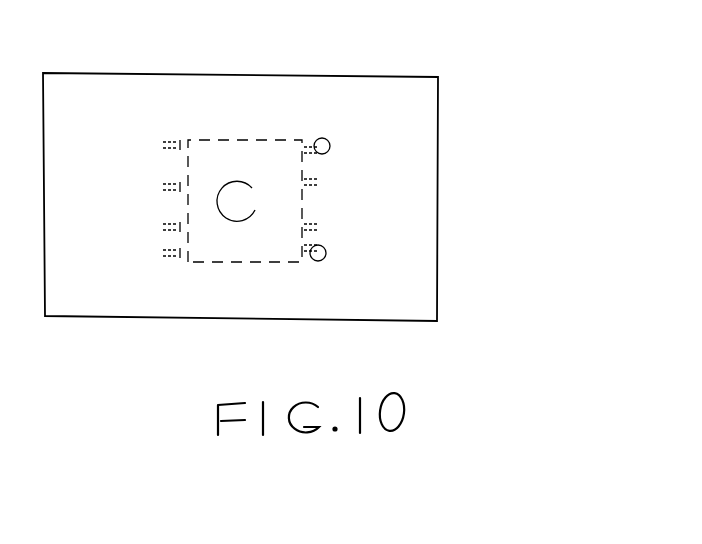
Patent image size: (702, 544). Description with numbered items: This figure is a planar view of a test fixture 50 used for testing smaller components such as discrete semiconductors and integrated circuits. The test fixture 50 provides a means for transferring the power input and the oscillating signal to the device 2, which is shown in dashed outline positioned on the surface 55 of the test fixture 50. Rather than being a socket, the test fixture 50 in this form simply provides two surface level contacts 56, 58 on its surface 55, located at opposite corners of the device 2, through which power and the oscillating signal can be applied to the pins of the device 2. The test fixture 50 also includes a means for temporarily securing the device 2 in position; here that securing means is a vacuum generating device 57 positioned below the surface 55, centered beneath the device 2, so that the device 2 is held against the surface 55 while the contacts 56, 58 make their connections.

The device 2 is at (237, 137).
The test fixture 50 is at (430, 137).
The surface 55 is at (402, 235).
The surface level contact 56 is at (330, 141).
The vacuum generating device 57 is at (237, 205).
The surface level contact 58 is at (323, 259).